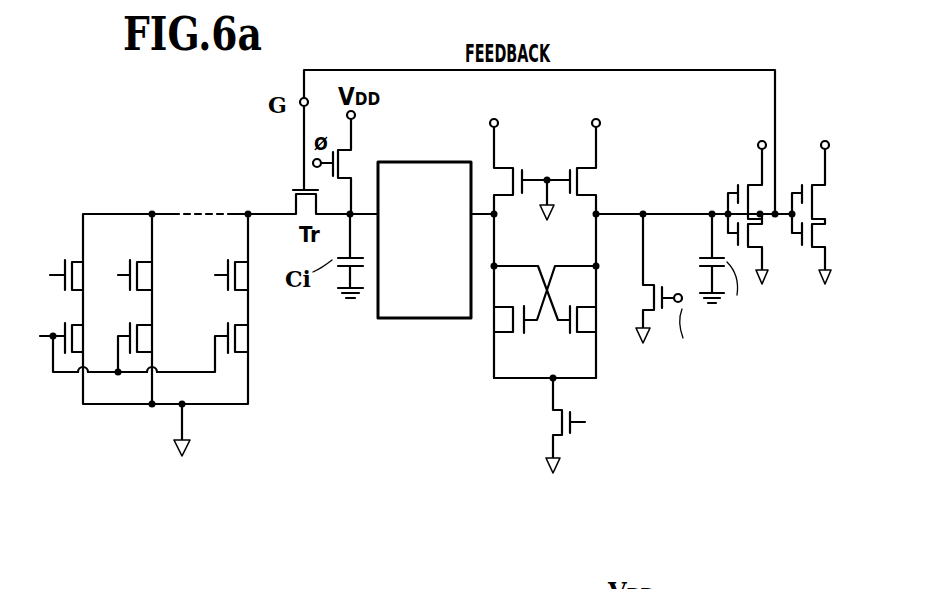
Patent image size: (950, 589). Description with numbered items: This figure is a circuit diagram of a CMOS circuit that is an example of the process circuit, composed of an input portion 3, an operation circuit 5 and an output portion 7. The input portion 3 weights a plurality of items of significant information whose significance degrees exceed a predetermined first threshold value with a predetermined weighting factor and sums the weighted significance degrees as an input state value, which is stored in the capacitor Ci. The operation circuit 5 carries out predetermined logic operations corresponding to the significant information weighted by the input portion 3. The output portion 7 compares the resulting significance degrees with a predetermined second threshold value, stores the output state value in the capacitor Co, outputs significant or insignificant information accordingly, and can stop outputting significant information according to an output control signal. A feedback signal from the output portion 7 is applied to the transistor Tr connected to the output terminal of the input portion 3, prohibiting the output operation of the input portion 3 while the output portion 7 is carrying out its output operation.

The input portion 3 is at (370, 492).
The operation circuit 5 is at (420, 162).
The output portion 7 is at (482, 468).